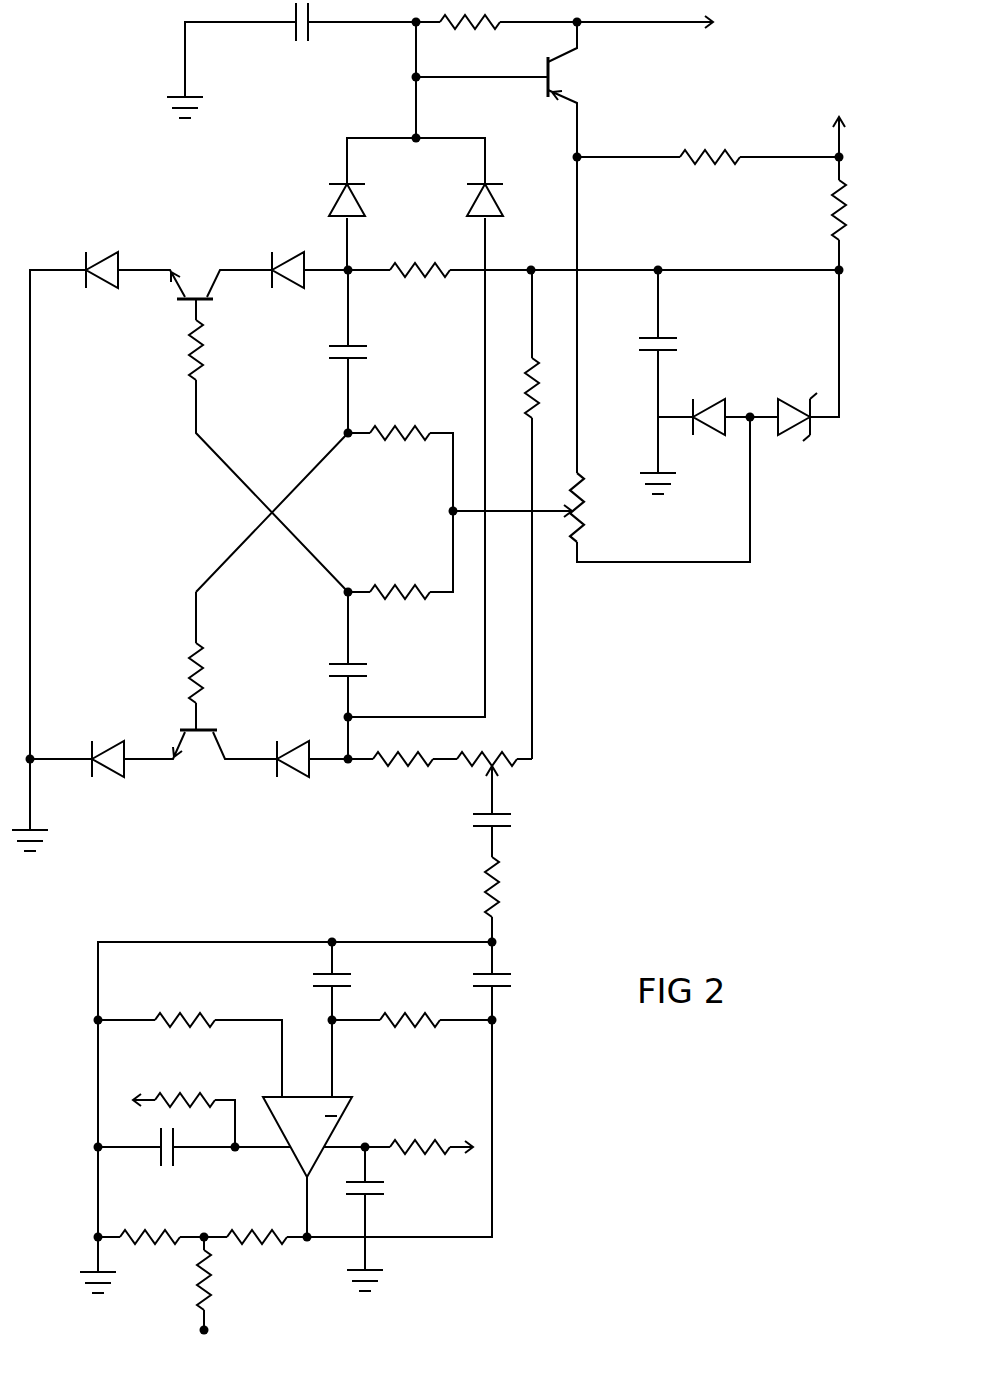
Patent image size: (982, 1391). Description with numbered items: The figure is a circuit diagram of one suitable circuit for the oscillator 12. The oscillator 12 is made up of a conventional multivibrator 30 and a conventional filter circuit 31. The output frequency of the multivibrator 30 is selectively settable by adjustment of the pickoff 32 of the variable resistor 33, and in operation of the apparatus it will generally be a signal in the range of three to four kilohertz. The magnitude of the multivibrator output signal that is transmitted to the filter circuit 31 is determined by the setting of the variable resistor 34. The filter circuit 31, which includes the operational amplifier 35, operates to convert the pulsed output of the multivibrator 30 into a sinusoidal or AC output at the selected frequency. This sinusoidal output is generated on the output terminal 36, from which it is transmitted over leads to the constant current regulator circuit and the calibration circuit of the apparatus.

The oscillator 12 is at (666, 680).
The multivibrator 30 is at (165, 523).
The filter circuit 31 is at (252, 993).
The pickoff 32 is at (541, 514).
The variable resistor 33 is at (588, 510).
The variable resistor 34 is at (515, 784).
The operational amplifier 35 is at (357, 1082).
The output terminal 36 is at (208, 1329).